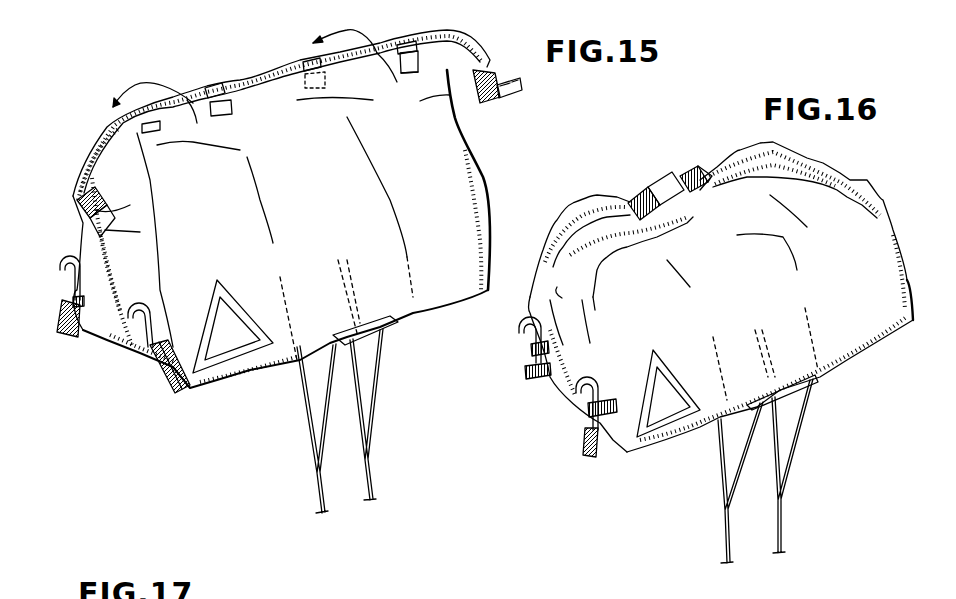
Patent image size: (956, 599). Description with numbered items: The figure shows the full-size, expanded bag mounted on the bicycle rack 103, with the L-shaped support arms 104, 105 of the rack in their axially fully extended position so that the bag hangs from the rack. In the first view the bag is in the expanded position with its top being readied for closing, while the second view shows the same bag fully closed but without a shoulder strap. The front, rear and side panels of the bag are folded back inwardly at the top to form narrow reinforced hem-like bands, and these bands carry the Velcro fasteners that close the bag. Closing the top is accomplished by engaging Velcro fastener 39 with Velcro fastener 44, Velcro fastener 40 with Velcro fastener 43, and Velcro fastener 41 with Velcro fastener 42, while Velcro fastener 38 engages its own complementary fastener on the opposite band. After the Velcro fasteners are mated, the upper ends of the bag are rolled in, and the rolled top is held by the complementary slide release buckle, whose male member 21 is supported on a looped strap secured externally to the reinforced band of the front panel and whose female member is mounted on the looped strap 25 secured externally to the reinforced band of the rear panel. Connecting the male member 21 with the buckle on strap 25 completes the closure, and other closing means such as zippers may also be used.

In FIG. 16, the male member 21 is at (653, 183).
In FIG. 16, the looped strap 25 is at (688, 170).
In FIG. 15, the Velcro fastener 38 is at (150, 131).
In FIG. 15, the Velcro fastener 39 is at (227, 115).
In FIG. 15, the Velcro fastener 40 is at (303, 83).
In FIG. 15, the Velcro fastener 41 is at (407, 73).
In FIG. 15, the Velcro fastener 42 is at (400, 70).
In FIG. 15, the Velcro fastener 43 is at (307, 63).
In FIG. 15, the Velcro fastener 44 is at (213, 85).
In FIG. 15, the bicycle rack 103 is at (300, 458).
In FIG. 16, the bicycle rack 103 is at (797, 485).
In FIG. 15, the L-shaped support arm 104 is at (170, 395).
In FIG. 16, the L-shaped support arm 104 is at (607, 453).
In FIG. 15, the L-shaped support arm 105 is at (77, 337).
In FIG. 16, the L-shaped support arm 105 is at (520, 330).